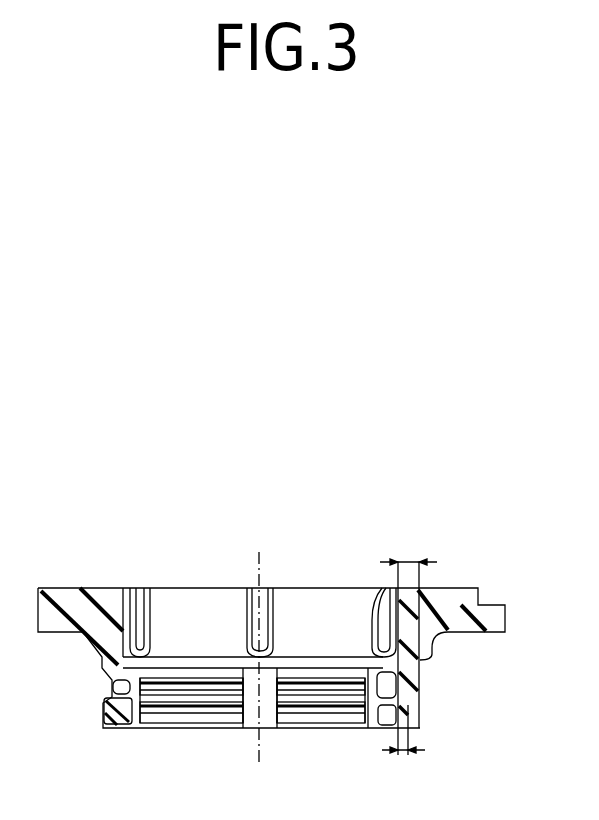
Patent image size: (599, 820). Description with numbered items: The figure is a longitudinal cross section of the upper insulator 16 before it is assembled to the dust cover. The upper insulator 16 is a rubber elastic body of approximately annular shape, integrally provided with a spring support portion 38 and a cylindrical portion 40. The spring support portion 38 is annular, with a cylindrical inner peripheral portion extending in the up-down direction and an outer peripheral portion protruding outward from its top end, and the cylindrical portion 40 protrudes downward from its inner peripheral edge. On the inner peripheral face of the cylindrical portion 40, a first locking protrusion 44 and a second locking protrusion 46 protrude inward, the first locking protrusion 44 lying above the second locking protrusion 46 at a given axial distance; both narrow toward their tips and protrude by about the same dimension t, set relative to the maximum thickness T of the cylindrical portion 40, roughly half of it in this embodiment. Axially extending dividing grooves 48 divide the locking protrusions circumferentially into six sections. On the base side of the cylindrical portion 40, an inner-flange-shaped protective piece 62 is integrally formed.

The upper insulator 16 is at (468, 560).
The spring support portion 38 is at (95, 608).
The cylindrical portion 40 is at (100, 698).
The first locking protrusion 44 is at (112, 685).
The second locking protrusion 46 is at (112, 712).
The dividing groove 48 is at (140, 715).
The protective piece 62 is at (366, 668).